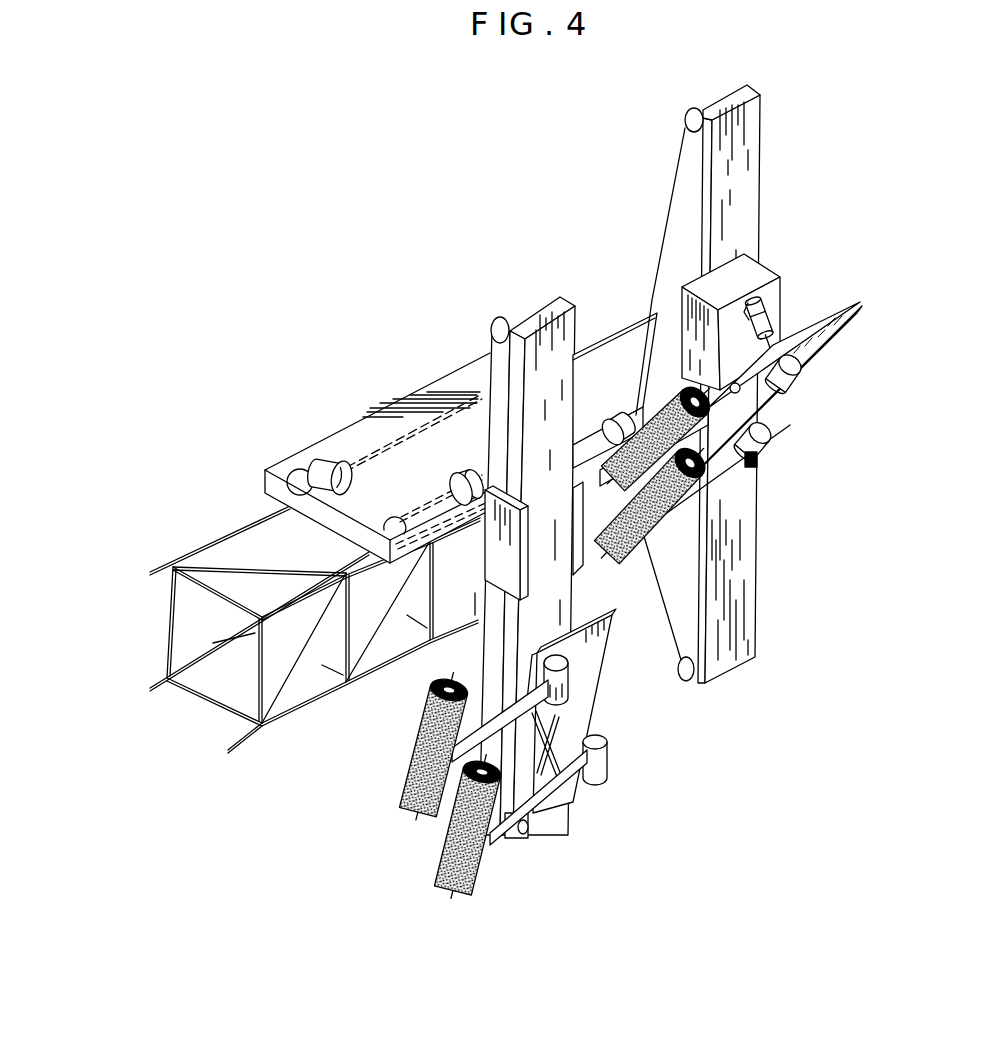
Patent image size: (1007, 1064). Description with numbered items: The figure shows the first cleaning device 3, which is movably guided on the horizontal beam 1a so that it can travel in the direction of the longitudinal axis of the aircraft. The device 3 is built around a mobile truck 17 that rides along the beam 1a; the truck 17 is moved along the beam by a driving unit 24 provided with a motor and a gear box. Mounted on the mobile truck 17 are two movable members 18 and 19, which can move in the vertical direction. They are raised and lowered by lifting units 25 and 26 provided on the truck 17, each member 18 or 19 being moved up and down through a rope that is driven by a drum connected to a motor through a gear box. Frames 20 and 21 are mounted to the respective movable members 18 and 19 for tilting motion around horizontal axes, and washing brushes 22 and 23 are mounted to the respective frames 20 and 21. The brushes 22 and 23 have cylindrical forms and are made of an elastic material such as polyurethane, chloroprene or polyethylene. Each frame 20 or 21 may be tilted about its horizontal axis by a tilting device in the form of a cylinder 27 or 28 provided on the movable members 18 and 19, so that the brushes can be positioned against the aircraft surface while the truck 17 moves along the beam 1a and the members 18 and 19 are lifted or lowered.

The horizontal beam 1a is at (211, 542).
The first cleaning device 3 is at (460, 280).
The mobile truck 17 is at (363, 437).
The movable member 18 is at (552, 302).
The movable member 19 is at (765, 283).
The frame 20 is at (588, 718).
The frame 21 is at (823, 315).
The washing brush 22 is at (444, 864).
The washing brush 23 is at (598, 563).
The driving unit 24 is at (320, 460).
The lifting unit 25 is at (472, 452).
The lifting unit 26 is at (639, 340).
The cylinder 27 is at (560, 713).
The cylinder 28 is at (767, 313).